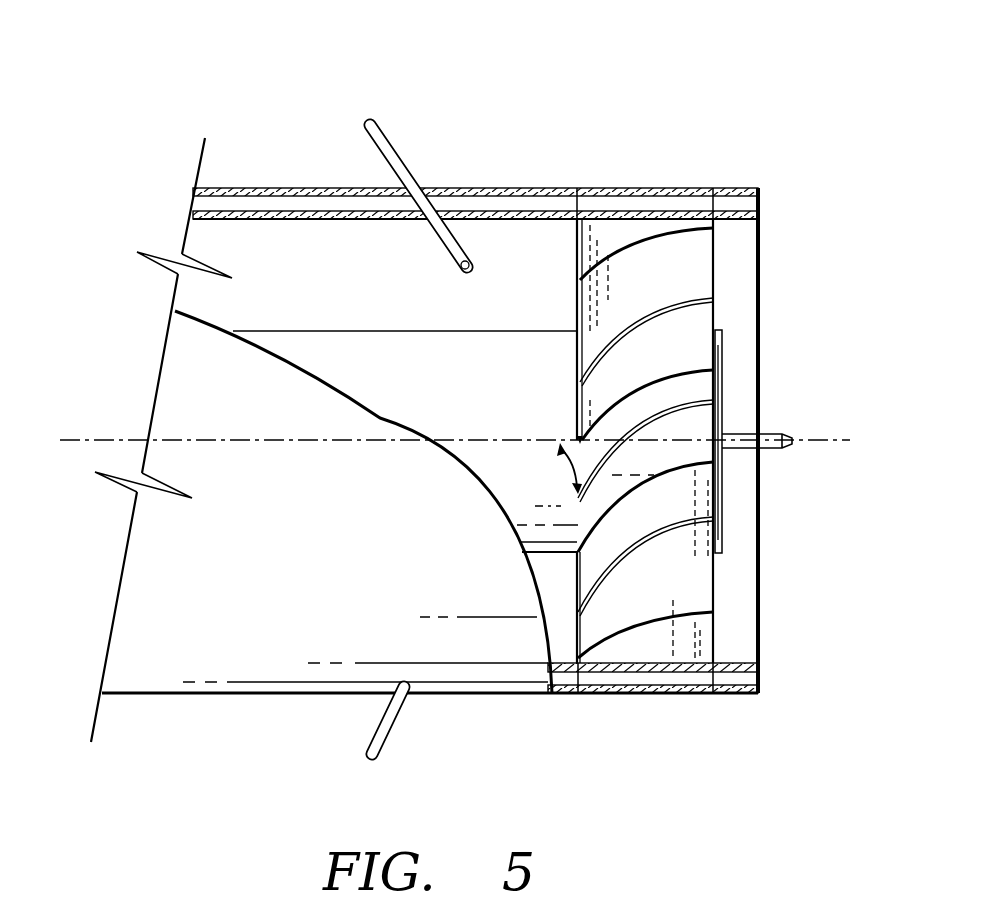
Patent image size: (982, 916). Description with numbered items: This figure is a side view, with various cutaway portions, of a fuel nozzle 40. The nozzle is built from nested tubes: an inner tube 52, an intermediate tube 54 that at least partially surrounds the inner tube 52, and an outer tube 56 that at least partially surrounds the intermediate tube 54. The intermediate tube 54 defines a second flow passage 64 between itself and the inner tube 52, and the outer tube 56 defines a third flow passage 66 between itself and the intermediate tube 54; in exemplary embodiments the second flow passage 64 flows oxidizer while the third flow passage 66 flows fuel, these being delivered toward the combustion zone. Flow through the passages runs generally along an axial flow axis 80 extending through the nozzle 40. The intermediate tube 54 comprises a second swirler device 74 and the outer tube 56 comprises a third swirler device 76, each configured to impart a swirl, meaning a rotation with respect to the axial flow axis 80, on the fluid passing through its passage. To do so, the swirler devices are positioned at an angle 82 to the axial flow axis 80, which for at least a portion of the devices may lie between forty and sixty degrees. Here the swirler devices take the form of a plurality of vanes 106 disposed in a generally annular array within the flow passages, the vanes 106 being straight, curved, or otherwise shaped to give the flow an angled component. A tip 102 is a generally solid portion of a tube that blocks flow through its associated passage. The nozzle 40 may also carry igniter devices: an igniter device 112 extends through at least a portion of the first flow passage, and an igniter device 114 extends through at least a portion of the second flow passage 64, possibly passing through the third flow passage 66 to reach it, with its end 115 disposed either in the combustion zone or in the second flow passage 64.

The fuel nozzle 40 is at (215, 68).
The inner tube 52 is at (363, 331).
The intermediate tube 54 is at (542, 210).
The outer tube 56 is at (453, 187).
The second flow passage 64 is at (313, 285).
The third flow passage 66 is at (195, 202).
The second swirler device 74 is at (683, 388).
The third swirler device 76 is at (677, 202).
The axial flow axis 80 is at (512, 440).
The angle 82 is at (560, 481).
The tip 102 is at (722, 496).
The vane 106 is at (698, 418).
The igniter device 112 is at (769, 450).
The igniter device 114 is at (358, 148).
The end 115 is at (470, 283).